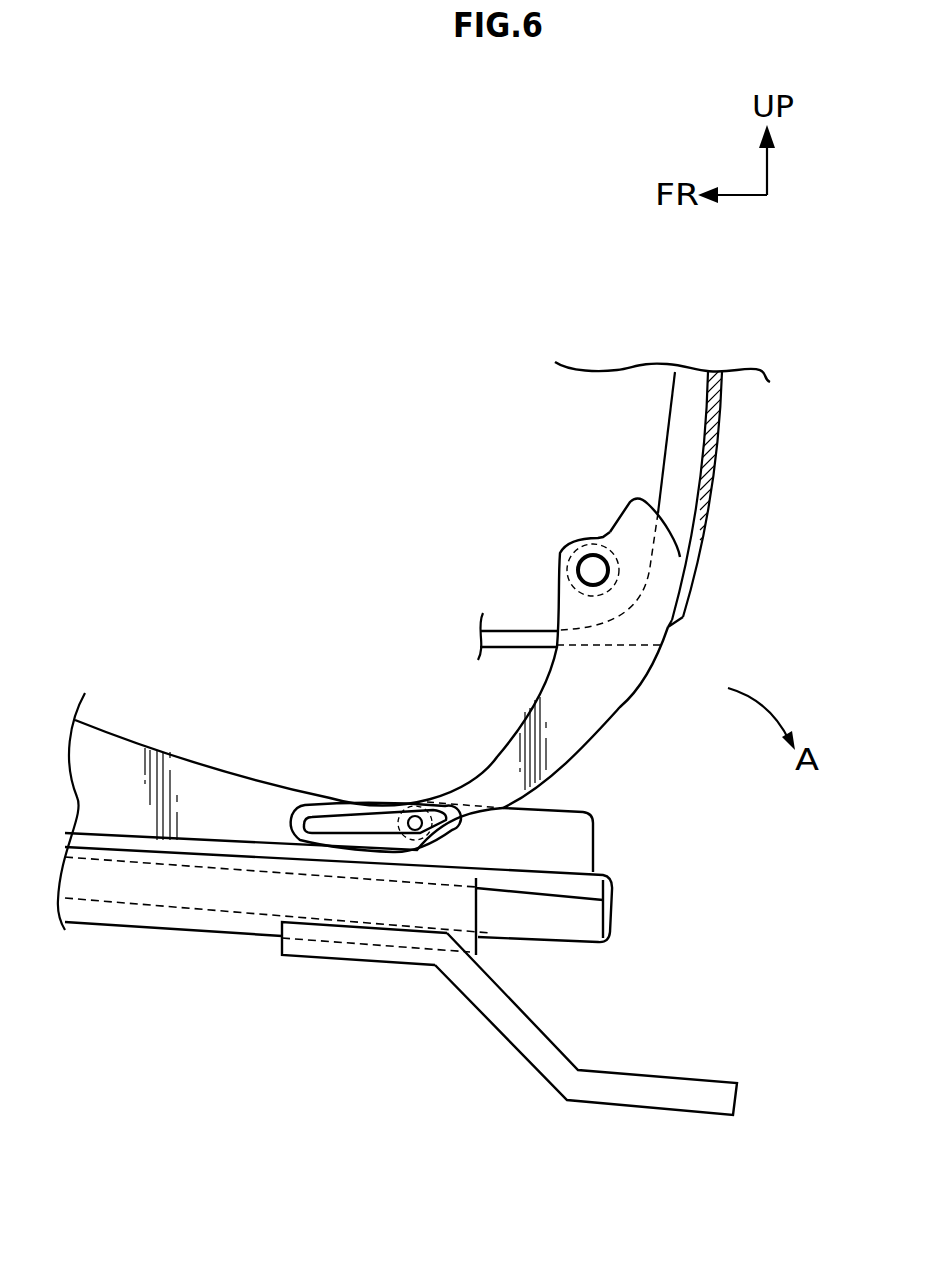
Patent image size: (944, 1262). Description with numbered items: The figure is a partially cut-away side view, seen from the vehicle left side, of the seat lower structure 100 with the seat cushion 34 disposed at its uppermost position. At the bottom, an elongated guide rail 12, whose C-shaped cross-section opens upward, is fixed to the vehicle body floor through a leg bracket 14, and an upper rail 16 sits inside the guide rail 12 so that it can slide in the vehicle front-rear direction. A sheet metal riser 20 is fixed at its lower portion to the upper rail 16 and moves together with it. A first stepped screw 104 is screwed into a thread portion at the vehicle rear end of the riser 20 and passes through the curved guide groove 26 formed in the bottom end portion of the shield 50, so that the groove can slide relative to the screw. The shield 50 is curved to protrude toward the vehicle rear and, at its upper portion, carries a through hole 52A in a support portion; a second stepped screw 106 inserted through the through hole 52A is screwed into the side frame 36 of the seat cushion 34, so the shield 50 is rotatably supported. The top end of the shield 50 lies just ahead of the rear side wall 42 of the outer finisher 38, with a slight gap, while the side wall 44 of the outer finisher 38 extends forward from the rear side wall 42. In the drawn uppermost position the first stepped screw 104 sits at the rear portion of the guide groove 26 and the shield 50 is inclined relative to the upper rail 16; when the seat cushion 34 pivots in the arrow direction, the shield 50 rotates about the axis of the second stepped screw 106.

The seat mounting structure 100 is at (343, 347).
The guide rail 12 is at (207, 933).
The leg bracket 14 is at (652, 1110).
The upper rail 16 is at (613, 923).
The riser 20 is at (595, 828).
The guide groove 26 is at (342, 832).
The seat cushion 34 is at (701, 437).
The side frame 36 is at (672, 400).
The outer finisher 38 is at (673, 632).
The rear side wall 42 is at (717, 448).
The side wall 44 is at (517, 640).
The shield 50 is at (387, 658).
The through hole 52A is at (590, 572).
The first stepped screw 104 is at (423, 812).
The second stepped screw 106 is at (605, 537).